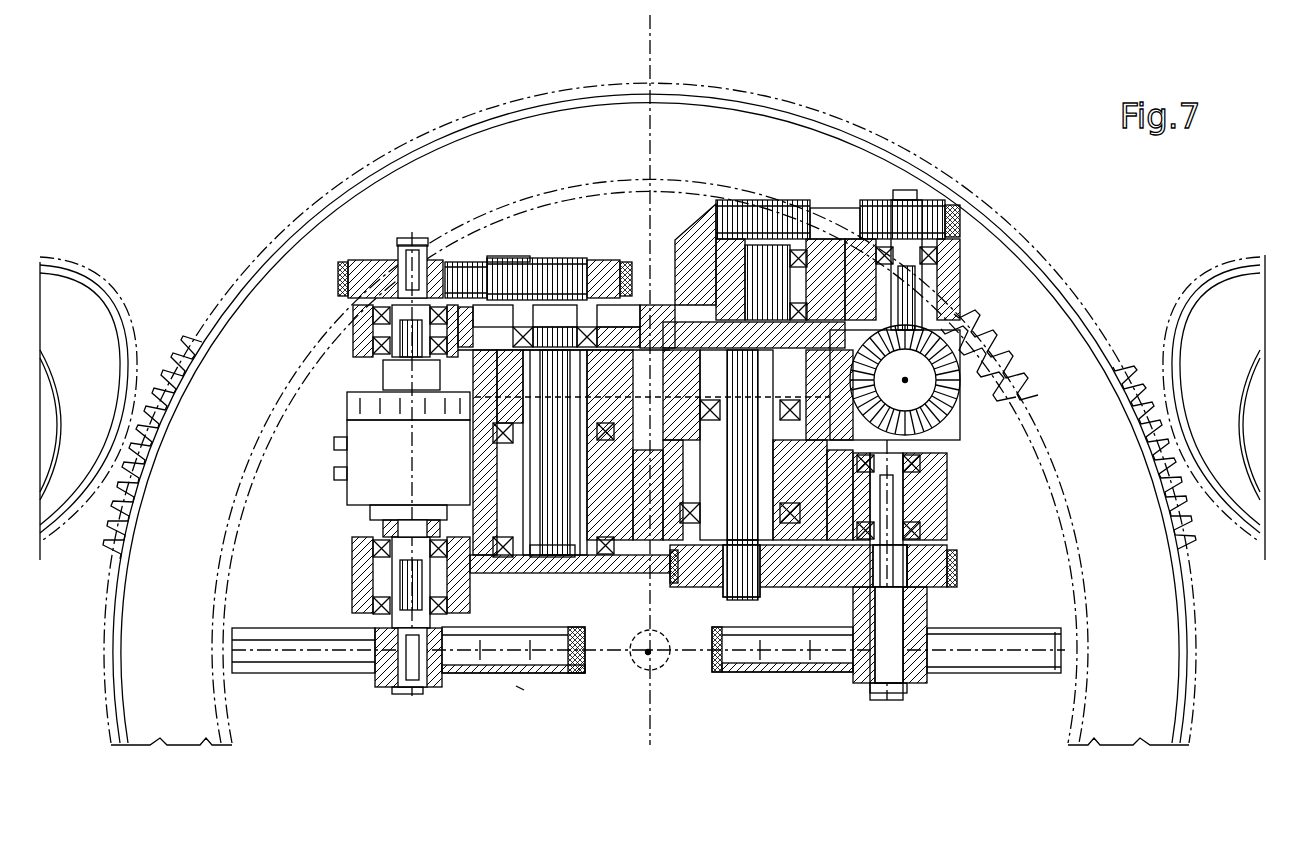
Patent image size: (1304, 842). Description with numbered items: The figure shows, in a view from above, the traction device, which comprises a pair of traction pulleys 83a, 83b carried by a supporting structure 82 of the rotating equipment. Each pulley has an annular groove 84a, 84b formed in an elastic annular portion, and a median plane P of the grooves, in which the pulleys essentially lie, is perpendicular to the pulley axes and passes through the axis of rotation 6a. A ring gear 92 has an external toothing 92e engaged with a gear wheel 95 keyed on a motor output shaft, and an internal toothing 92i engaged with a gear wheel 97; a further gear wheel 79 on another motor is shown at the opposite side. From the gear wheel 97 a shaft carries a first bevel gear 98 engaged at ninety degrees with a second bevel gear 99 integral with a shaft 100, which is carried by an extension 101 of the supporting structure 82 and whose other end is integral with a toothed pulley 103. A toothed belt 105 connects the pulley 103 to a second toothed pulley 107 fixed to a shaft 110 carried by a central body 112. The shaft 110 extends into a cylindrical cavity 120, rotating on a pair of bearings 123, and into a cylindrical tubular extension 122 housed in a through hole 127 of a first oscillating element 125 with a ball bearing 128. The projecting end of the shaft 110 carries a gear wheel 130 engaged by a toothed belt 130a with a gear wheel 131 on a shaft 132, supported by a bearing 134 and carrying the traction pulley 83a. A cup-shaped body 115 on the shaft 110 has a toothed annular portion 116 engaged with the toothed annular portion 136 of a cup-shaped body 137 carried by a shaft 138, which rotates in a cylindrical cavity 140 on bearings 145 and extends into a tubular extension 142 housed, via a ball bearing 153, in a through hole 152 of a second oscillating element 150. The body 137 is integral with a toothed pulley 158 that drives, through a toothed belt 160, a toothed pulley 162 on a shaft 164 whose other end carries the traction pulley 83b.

The supporting structure 82 is at (700, 182).
The bearings 123 is at (692, 235).
The second toothed pulley 107 is at (760, 200).
The toothed belt 105 is at (805, 250).
The toothed annular portion 116 is at (895, 235).
The toothed pulley 103 is at (912, 237).
The extension 101 is at (952, 245).
The external toothing 92e is at (1040, 240).
The ring gear 92 is at (650, 414).
The gear wheel 79 is at (1225, 330).
The shaft 100 is at (945, 285).
The second bevel gear 99 is at (960, 322).
The gear wheel 97 is at (985, 370).
The first bevel gear 98 is at (1000, 402).
The ball bearing 128 is at (995, 432).
The internal toothing 92i is at (1035, 452).
The supporting bearing 134 is at (935, 470).
The first oscillating element 125 is at (945, 520).
The gear wheel 131 is at (960, 560).
The toothed belt 130a is at (962, 572).
The shaft 132 is at (925, 606).
The traction pulley 83a is at (1020, 670).
The cylindrical tubular extension 122 is at (785, 530).
The cylindrical cavity 120 is at (752, 540).
The annular groove 84a is at (715, 645).
The axis of rotation 6a is at (660, 658).
The annular groove 84b is at (588, 652).
The bearings 145 is at (556, 325).
The median plane P is at (520, 688).
The second oscillating element 150 is at (478, 597).
The traction pulley 83b is at (405, 692).
The through hole 127 is at (645, 555).
The shaft 138 is at (540, 558).
The ball bearing 153 is at (495, 558).
The gear wheel 130 is at (705, 560).
The shaft 110 is at (760, 560).
The shaft 164 is at (395, 352).
The cylindrical tubular extension 142 is at (500, 478).
The through hole 152 is at (520, 470).
The cylindrical cavity 140 is at (440, 415).
The toothed pulley 162 is at (400, 248).
The toothed belt 160 is at (485, 262).
The toothed pulley 158 is at (520, 260).
The cup-shaped body 137 is at (552, 262).
The cup-shaped body 115 is at (662, 300).
The central body 112 is at (665, 305).
The toothed annular portion 136 is at (640, 300).
The gear wheel 95 is at (128, 305).